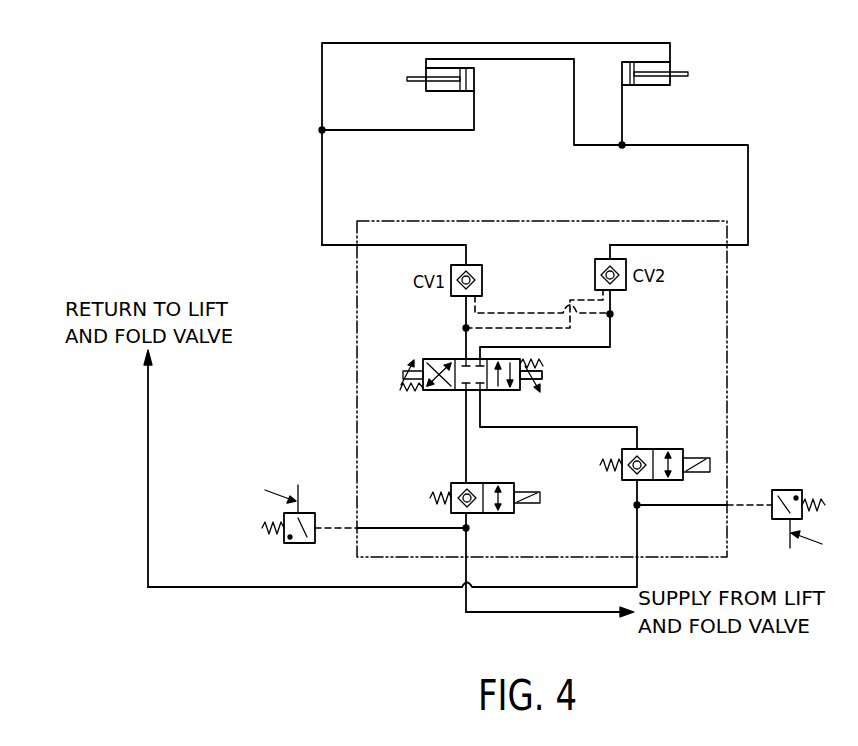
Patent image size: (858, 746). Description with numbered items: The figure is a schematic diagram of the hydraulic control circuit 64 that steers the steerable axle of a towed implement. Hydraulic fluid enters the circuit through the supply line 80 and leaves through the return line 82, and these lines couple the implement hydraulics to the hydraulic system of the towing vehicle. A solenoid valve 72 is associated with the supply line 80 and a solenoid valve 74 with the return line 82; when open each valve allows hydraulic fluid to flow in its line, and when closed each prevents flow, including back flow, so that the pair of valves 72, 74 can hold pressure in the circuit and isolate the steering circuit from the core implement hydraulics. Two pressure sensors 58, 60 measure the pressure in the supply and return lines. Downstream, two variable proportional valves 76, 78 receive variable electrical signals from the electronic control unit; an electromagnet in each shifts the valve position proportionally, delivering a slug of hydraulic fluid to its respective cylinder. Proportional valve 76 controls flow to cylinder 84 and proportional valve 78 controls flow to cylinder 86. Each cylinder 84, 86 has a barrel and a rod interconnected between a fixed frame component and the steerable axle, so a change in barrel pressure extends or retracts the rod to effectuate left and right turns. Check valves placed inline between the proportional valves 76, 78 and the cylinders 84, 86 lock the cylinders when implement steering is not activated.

The hydraulic control circuit 64 is at (132, 132).
The cylinder 84 is at (411, 85).
The cylinder 86 is at (680, 78).
The proportional valve 76 is at (441, 391).
The proportional valve 78 is at (503, 391).
The solenoid valve 72 is at (503, 513).
The solenoid valve 74 is at (664, 447).
The pressure sensor 60 is at (298, 543).
The pressure sensor 58 is at (788, 490).
The supply line 80 is at (547, 612).
The return line 82 is at (305, 587).